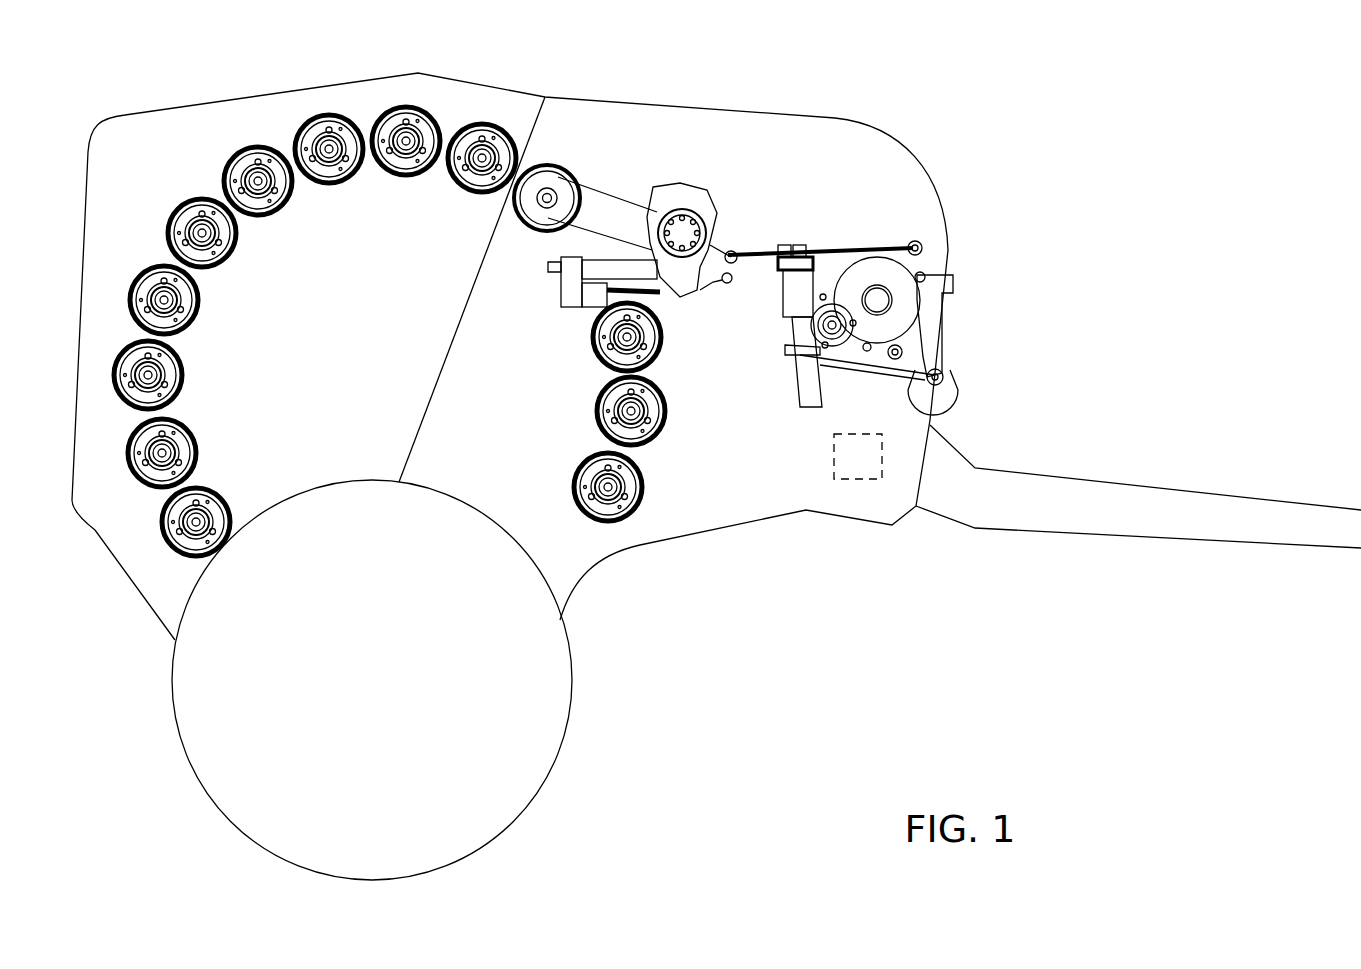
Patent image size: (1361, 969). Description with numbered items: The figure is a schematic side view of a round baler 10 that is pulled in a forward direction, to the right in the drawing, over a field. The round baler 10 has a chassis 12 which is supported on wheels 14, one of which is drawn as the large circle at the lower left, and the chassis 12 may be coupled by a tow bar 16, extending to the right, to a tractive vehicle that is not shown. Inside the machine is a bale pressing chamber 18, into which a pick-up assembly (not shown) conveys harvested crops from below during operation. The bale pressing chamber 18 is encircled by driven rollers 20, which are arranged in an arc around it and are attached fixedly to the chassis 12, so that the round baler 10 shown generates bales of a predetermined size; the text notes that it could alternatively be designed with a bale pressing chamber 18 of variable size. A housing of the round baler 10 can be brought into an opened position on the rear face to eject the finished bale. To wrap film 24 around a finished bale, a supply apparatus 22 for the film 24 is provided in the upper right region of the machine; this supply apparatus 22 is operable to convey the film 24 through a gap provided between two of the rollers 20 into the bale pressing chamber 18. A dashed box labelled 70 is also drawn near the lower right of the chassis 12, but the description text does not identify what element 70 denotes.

The round baler 10 is at (688, 643).
The chassis 12 is at (705, 537).
The wheels 14 is at (445, 728).
The tow bar 16 is at (1143, 517).
The bale pressing chamber 18 is at (341, 334).
The rollers 20 is at (397, 117).
The supply apparatus 22 is at (788, 210).
The film 24 is at (868, 243).
The sensor 70 is at (858, 455).